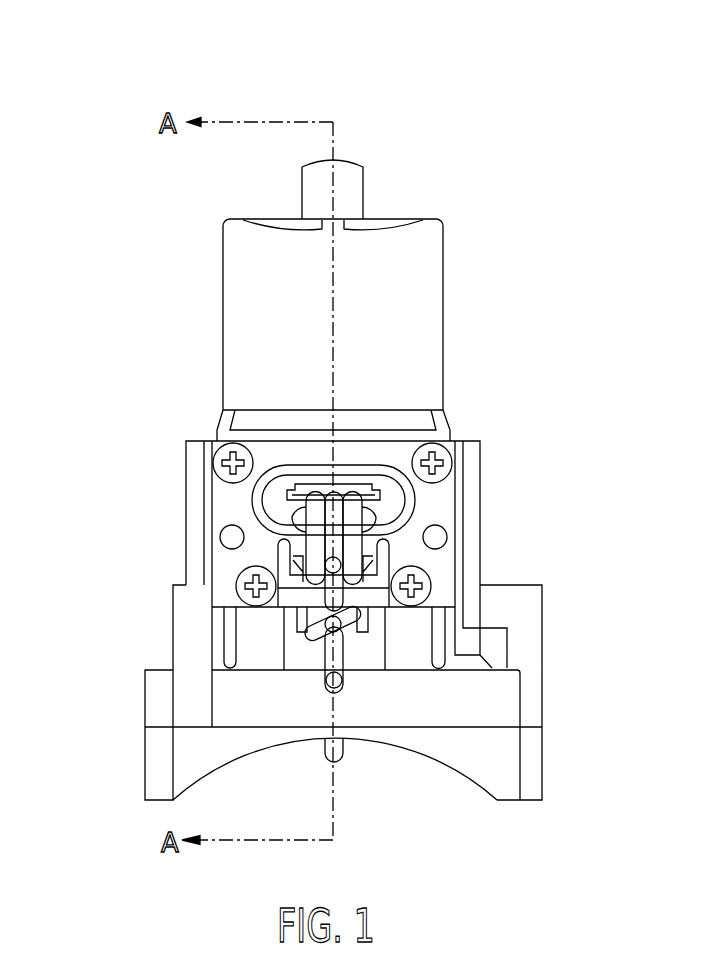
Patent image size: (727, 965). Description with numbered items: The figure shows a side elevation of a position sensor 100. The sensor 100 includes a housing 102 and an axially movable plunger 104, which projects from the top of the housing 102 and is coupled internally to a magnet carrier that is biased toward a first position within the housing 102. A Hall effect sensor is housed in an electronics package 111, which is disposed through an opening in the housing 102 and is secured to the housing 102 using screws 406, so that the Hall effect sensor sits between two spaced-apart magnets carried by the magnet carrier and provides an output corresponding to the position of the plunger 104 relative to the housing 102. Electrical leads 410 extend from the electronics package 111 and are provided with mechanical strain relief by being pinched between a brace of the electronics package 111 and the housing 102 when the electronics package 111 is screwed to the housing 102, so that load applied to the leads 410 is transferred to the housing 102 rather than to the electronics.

The position sensor 100 is at (82, 70).
The plunger 104 is at (363, 197).
The screw 406 is at (452, 453).
The electronics package 111 is at (450, 505).
The electrical leads 410 is at (323, 660).
The housing 102 is at (540, 645).